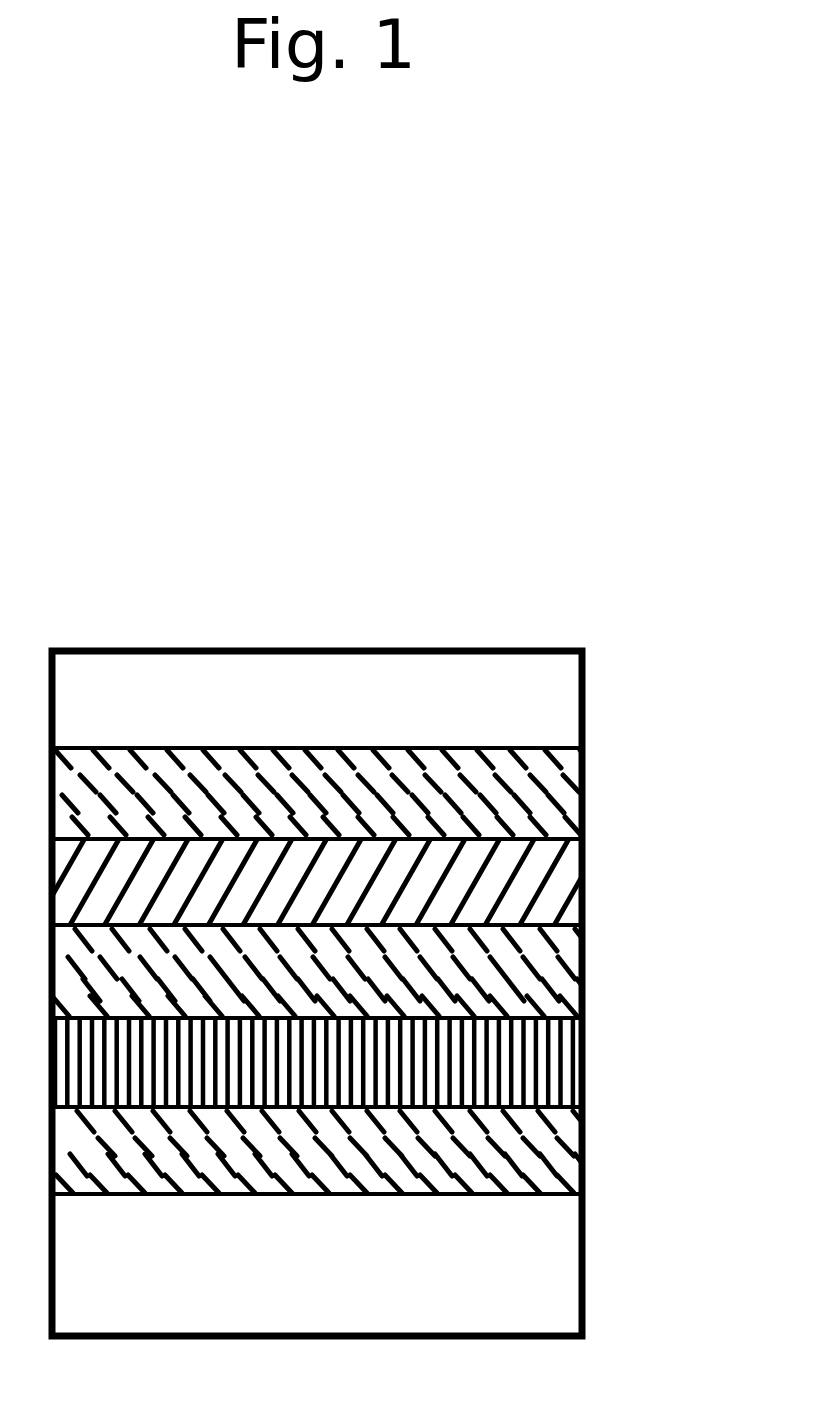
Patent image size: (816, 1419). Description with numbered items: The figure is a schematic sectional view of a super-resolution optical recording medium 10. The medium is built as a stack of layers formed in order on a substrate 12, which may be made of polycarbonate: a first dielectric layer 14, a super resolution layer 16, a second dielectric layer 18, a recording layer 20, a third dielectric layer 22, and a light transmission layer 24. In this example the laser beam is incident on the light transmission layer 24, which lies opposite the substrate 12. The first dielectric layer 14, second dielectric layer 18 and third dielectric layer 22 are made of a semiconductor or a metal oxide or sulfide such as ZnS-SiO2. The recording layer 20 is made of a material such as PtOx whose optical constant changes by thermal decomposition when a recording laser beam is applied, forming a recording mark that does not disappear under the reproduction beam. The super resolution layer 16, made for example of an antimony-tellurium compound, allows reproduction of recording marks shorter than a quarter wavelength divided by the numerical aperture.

The super-resolution optical recording medium 10 is at (431, 651).
The substrate 12 is at (557, 1260).
The first dielectric layer 14 is at (573, 1140).
The super resolution layer 16 is at (575, 1043).
The second dielectric layer 18 is at (572, 957).
The recording layer 20 is at (572, 873).
The third dielectric layer 22 is at (573, 773).
The light transmission layer 24 is at (573, 703).